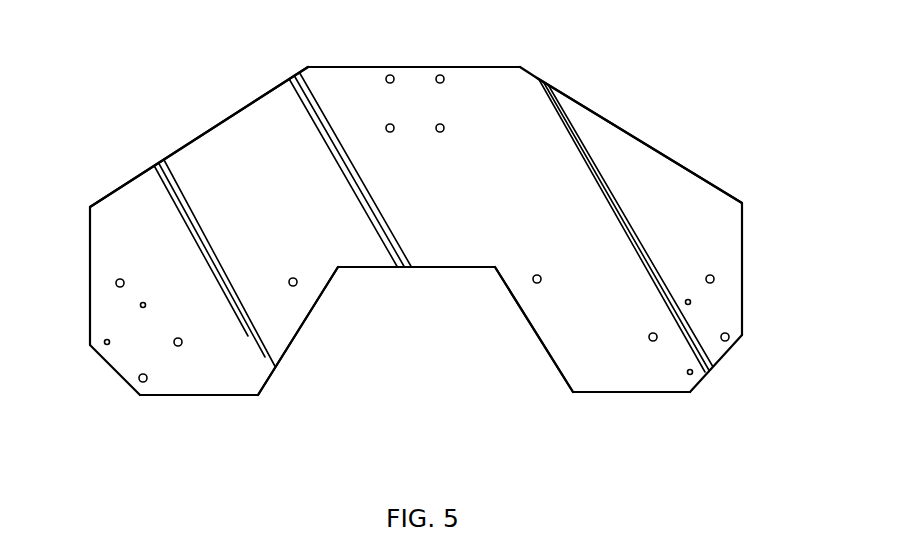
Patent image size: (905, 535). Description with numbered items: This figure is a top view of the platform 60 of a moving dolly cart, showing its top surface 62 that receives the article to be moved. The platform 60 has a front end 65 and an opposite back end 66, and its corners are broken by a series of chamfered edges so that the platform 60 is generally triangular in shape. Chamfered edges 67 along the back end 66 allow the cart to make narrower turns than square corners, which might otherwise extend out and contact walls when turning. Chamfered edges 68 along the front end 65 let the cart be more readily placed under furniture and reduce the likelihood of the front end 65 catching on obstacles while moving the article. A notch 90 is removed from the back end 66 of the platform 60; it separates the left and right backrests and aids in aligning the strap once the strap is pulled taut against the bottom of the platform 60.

The platform 60 is at (423, 255).
The top surface 62 is at (262, 219).
The front end 65 is at (353, 66).
The back end 66 is at (653, 392).
The chamfered edges 67 is at (120, 375).
The chamfered edges 68 is at (150, 172).
The notch 90 is at (468, 402).